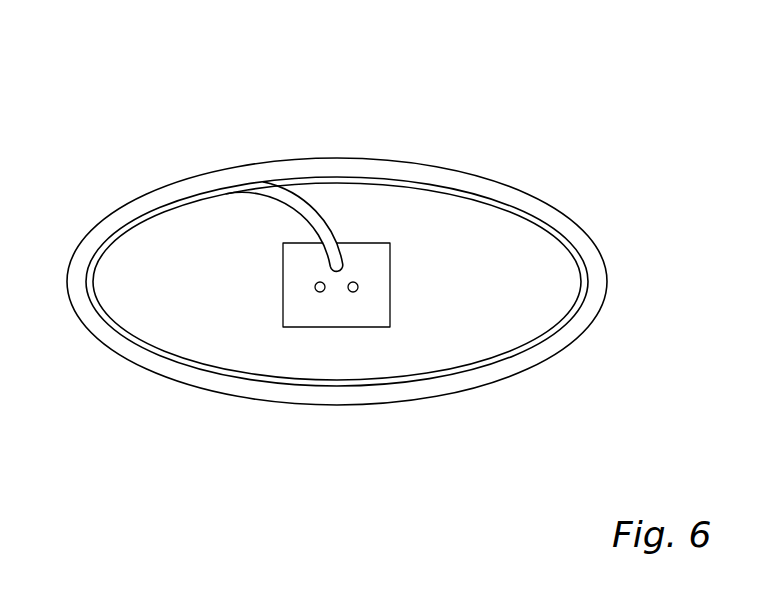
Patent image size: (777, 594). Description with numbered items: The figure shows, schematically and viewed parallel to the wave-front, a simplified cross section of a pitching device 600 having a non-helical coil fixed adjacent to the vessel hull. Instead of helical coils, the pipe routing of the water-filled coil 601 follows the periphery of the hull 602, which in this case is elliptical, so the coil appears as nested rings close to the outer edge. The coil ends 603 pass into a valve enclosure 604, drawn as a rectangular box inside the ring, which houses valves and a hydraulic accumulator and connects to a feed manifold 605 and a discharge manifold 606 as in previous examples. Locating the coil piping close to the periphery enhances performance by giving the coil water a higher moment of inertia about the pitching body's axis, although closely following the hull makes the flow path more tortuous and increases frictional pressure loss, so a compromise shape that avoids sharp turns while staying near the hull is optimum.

The pitching device 600 is at (465, 133).
The water-filled coil 601 is at (140, 235).
The hull 602 is at (135, 373).
The coil ends 603 is at (333, 217).
The valve enclosure 604 is at (398, 258).
The feed manifold 605 is at (352, 298).
The discharge manifold 606 is at (316, 292).